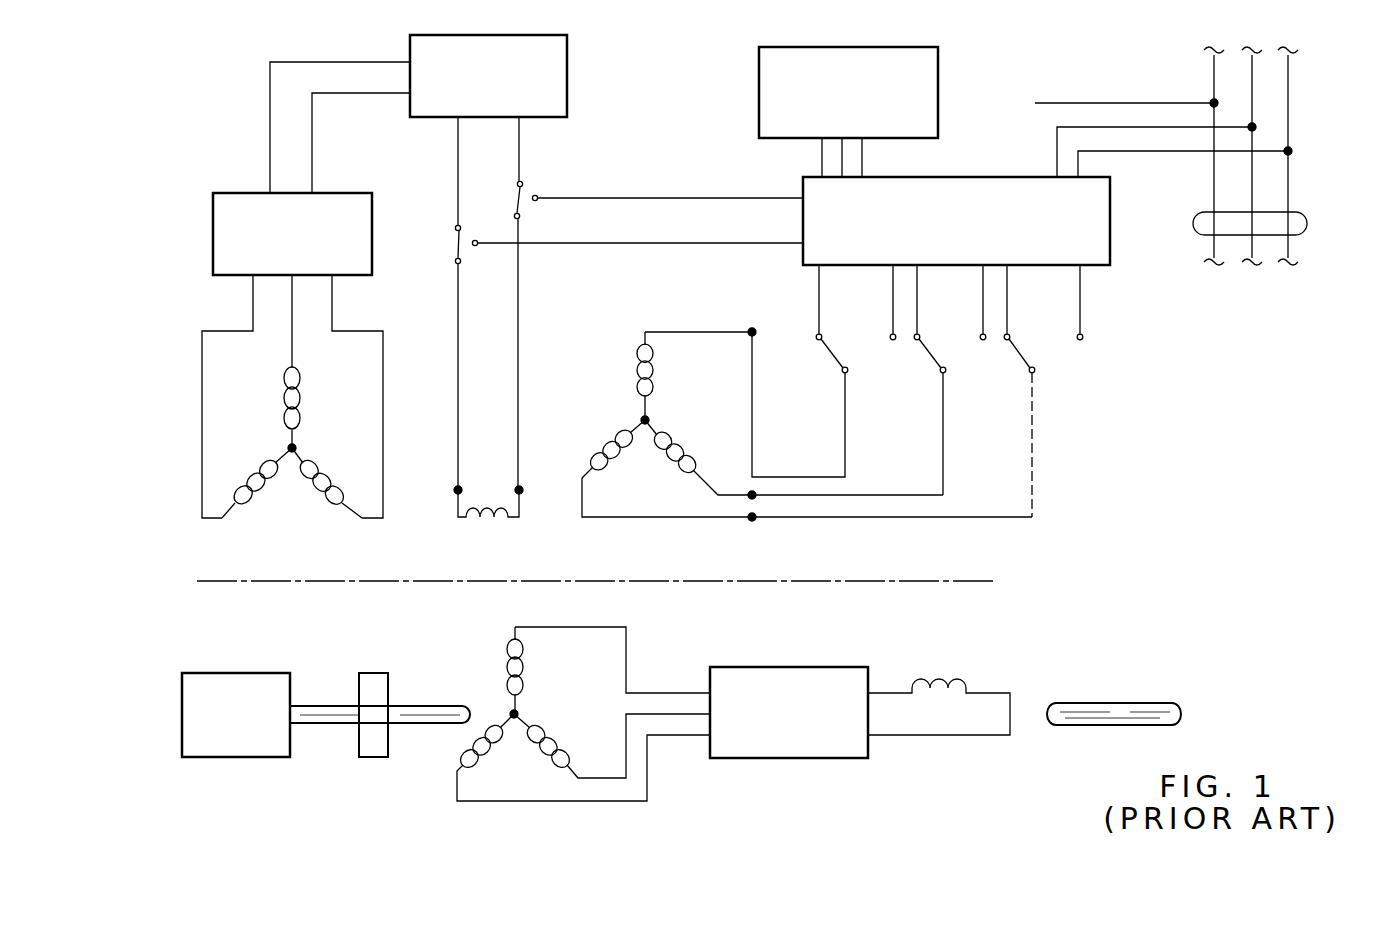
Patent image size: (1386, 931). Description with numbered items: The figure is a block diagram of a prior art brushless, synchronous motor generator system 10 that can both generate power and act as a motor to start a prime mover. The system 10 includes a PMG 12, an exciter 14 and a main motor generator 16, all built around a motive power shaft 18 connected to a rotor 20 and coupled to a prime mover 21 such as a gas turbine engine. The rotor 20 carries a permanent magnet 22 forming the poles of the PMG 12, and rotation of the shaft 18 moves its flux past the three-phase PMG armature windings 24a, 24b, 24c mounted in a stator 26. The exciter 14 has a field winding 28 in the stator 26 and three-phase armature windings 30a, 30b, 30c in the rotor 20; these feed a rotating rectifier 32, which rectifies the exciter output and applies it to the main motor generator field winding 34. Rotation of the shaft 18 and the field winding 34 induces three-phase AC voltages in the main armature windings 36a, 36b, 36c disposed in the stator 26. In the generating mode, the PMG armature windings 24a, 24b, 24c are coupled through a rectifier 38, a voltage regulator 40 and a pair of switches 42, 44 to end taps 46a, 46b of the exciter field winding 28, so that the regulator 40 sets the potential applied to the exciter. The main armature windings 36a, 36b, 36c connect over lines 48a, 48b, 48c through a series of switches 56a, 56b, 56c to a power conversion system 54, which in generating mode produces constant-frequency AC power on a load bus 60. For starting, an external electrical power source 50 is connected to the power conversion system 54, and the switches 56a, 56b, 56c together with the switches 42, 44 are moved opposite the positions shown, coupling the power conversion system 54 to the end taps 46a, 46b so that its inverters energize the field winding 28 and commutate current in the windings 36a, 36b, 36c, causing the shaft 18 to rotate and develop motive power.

The brushless synchronous motor generator system 10 is at (1124, 593).
The PMG 12 is at (269, 396).
The exciter 14 is at (478, 460).
The main motor generator 16 is at (546, 464).
The motive power shaft 18 is at (305, 705).
The rotor 20 is at (367, 726).
The prime mover 21 is at (253, 673).
The permanent magnet 22 is at (388, 695).
The PMG armature winding 24a is at (298, 385).
The PMG armature winding 24b is at (322, 470).
The PMG armature winding 24c is at (245, 478).
The stator 26 is at (212, 540).
The exciter field winding 28 is at (486, 523).
The exciter armature winding 30a is at (526, 660).
The exciter armature winding 30b is at (553, 740).
The exciter armature winding 30c is at (583, 757).
The rotating rectifier 32 is at (800, 759).
The main motor generator field winding 34 is at (942, 686).
The main motor generator armature winding 36a is at (638, 358).
The main motor generator armature winding 36b is at (671, 447).
The main motor generator armature winding 36c is at (608, 478).
The rectifier 38 is at (257, 193).
The voltage regulator 40 is at (567, 93).
The switch 42 is at (528, 211).
The switch 44 is at (455, 253).
The end tap 46a is at (452, 493).
The end tap 46b is at (514, 488).
The line 48a is at (845, 424).
The line 48b is at (943, 441).
The line 48c is at (1032, 463).
The external electrical power source 50 is at (759, 90).
The power conversion system 54 is at (1110, 242).
The switch 56a is at (823, 348).
The switch 56b is at (930, 348).
The switch 56c is at (1015, 350).
The load bus 60 is at (1307, 226).